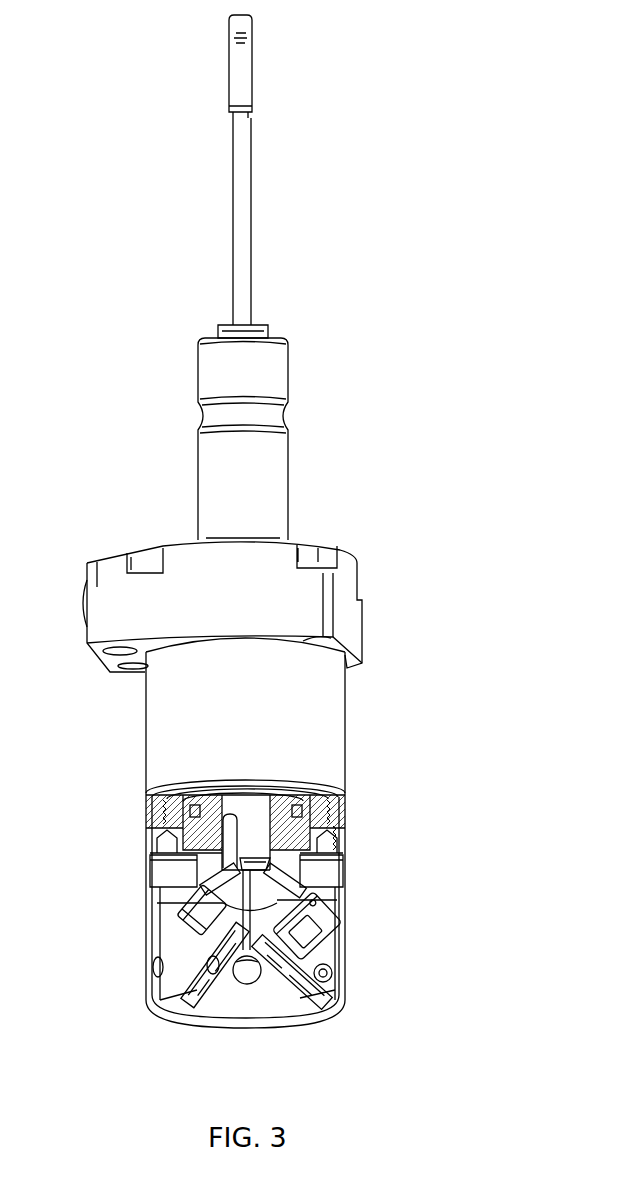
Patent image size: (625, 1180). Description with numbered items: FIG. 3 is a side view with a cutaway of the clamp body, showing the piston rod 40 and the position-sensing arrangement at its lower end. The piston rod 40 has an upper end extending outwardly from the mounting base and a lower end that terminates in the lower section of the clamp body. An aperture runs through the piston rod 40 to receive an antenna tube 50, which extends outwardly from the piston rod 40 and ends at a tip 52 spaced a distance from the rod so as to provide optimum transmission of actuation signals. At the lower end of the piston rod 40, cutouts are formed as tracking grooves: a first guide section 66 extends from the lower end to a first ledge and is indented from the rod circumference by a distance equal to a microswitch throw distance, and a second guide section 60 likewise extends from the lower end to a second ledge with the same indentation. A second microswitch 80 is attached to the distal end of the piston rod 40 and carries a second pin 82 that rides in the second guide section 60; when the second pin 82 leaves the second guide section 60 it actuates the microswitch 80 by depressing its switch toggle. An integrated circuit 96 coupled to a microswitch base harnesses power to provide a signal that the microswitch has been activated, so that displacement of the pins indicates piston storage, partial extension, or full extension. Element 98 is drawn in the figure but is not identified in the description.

The piston rod 40 is at (290, 477).
The antenna tube 50 is at (258, 223).
The tip 52 is at (262, 25).
The second guide section 60 is at (188, 853).
The first guide section 66 is at (270, 860).
The second microswitch 80 is at (343, 933).
The second pin 82 is at (292, 883).
The integrated circuit 96 is at (220, 990).
The connector boss 98 is at (257, 980).